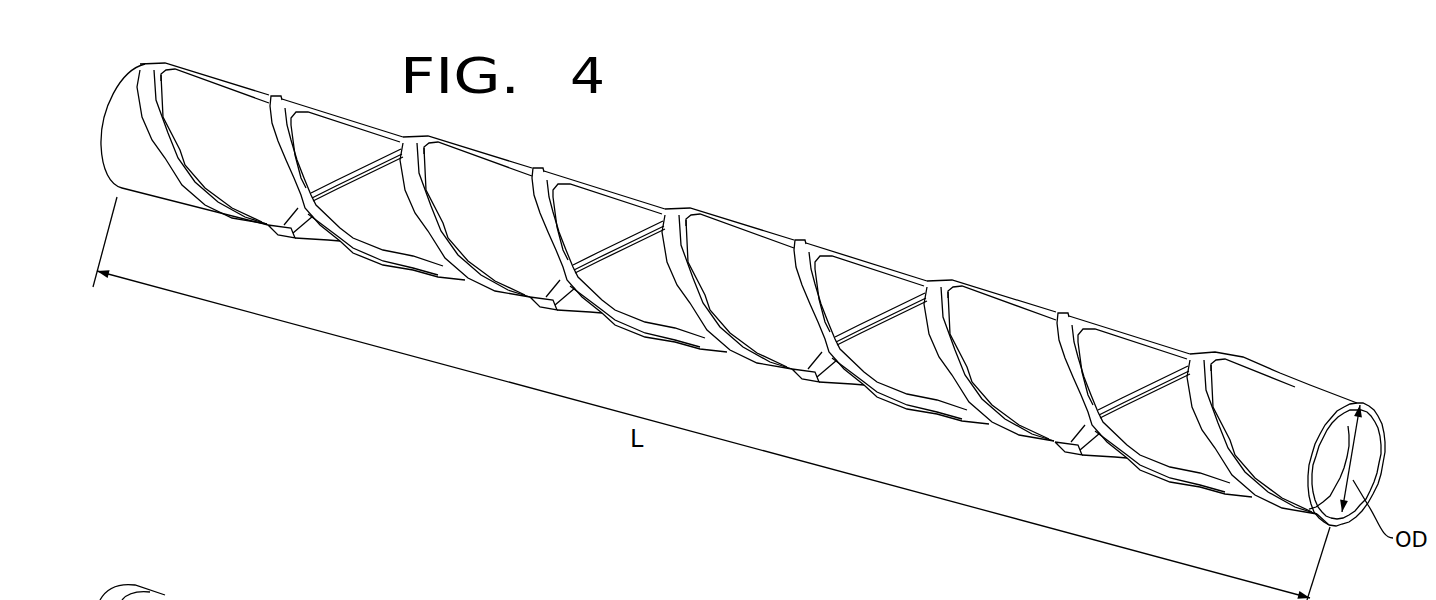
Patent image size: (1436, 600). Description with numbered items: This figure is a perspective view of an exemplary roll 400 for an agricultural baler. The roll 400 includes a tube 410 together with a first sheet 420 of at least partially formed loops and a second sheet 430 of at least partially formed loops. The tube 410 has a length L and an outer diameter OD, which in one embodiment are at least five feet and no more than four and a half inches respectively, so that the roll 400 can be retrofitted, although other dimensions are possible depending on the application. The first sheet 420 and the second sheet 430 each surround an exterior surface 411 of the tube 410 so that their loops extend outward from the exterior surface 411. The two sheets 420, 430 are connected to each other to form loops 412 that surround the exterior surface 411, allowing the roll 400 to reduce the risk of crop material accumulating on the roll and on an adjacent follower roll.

The roll 400 is at (1088, 246).
The tube 410 is at (778, 308).
The exterior surface 411 is at (598, 207).
The loops 412 is at (975, 350).
The first sheet 420 is at (692, 213).
The second sheet 430 is at (603, 315).